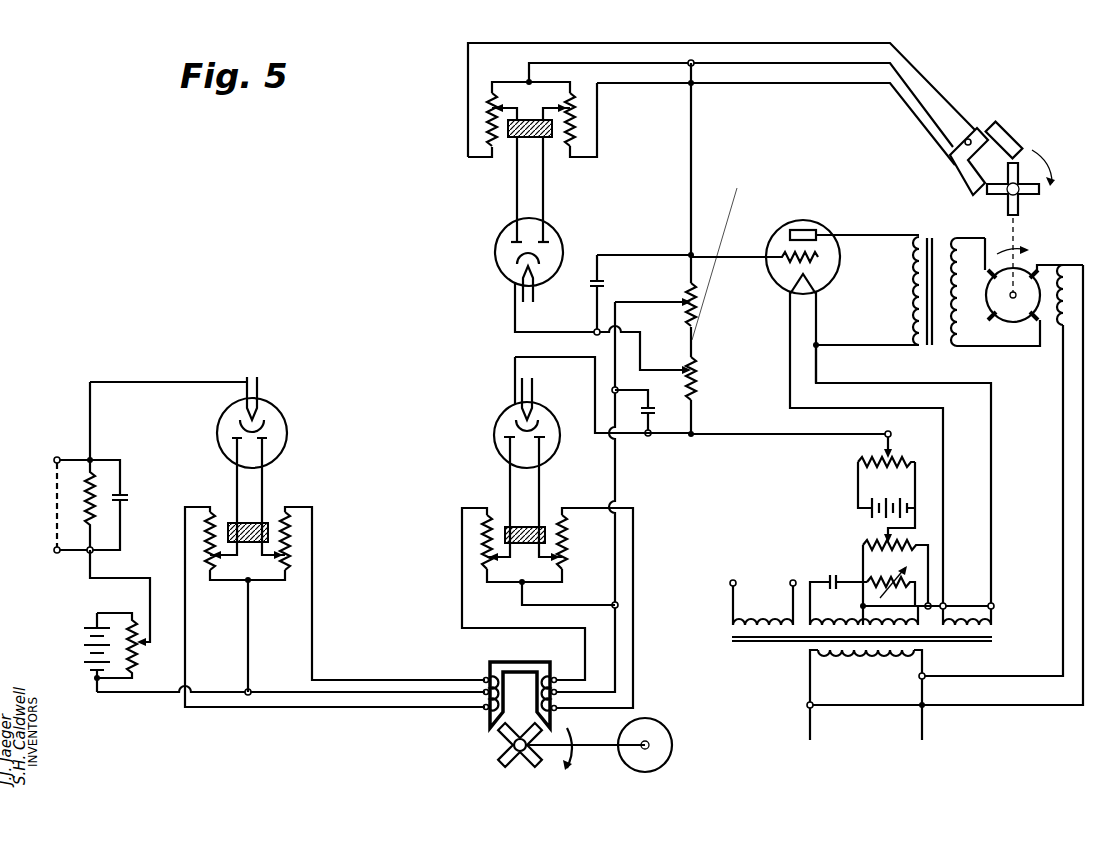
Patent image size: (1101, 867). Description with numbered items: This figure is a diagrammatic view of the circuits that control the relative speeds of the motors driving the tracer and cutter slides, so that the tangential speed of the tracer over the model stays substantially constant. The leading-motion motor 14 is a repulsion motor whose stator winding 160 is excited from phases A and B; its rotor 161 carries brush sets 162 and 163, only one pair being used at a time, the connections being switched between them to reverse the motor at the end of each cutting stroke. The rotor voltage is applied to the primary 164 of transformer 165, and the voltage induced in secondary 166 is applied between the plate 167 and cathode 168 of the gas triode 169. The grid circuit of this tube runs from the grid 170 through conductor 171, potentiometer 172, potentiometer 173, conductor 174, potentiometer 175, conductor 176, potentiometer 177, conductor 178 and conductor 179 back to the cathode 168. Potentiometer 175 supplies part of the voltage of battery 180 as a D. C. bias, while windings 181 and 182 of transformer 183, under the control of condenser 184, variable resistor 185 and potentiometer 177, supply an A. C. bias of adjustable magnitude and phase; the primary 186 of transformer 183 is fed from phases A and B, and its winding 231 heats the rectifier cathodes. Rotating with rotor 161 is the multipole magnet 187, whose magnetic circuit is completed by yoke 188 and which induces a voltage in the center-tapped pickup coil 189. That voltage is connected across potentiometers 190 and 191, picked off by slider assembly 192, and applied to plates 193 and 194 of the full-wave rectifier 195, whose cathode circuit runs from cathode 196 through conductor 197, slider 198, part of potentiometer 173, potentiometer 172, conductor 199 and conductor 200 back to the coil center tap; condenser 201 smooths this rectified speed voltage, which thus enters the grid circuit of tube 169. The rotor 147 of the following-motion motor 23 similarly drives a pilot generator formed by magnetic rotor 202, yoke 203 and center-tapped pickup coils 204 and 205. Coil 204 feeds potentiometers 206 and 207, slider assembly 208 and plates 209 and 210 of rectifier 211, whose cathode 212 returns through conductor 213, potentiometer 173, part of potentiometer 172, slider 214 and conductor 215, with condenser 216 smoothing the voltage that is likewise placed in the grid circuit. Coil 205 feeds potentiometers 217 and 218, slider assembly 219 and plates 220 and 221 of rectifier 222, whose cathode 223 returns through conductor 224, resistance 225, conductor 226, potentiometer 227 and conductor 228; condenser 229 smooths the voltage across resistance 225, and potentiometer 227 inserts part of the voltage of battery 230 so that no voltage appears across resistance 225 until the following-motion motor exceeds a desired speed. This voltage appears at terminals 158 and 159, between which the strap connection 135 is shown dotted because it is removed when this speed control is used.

The leading-motion motor 14 is at (905, 284).
The following-motion motor 23 is at (662, 732).
The strap connection 135 is at (55, 470).
The rotor of the following-motion motor 147 is at (660, 745).
The connection point 158 is at (55, 550).
The connection point 159 is at (55, 459).
The stator winding 160 is at (1063, 326).
The rotor 161 is at (1010, 344).
The brush set 162 is at (986, 275).
The brush set 163 is at (1035, 269).
The primary 164 is at (952, 258).
The transformer 165 is at (929, 238).
The secondary 166 is at (910, 285).
The plate 167 is at (816, 233).
The cathode 168 is at (820, 292).
The gas triode 169 is at (776, 228).
The grid 170 is at (785, 262).
The conductor 171 is at (722, 257).
The potentiometer 172 is at (695, 310).
The potentiometer 173 is at (690, 402).
The conductor 174 is at (780, 435).
The potentiometer 175 is at (885, 457).
The conductor 176 is at (917, 518).
The potentiometer 177 is at (885, 545).
The conductor 178 is at (965, 605).
The conductor 179 is at (994, 478).
The battery 180 is at (880, 503).
The winding 181 is at (812, 640).
The winding 182 is at (930, 641).
The transformer 183 is at (735, 640).
The condenser 184 is at (833, 576).
The variable resistor 185 is at (870, 584).
The primary 186 is at (862, 654).
The multipole magnet 187 is at (1027, 195).
The yoke 188 is at (1025, 140).
The center-tapped pickup coil 189 is at (967, 135).
The potentiometer 190 is at (488, 122).
The potentiometer 191 is at (572, 103).
The slider assembly 192 is at (531, 139).
The plate 193 is at (512, 241).
The plate 194 is at (548, 242).
The full-wave rectifier 195 is at (495, 258).
The cathode 196 is at (516, 267).
The conductor 197 is at (525, 332).
The potentiometer slider 198 is at (645, 370).
The conductor 199 is at (695, 190).
The conductor 200 is at (755, 62).
The condenser 201 is at (601, 285).
The magnetic rotor 202 is at (512, 762).
The yoke 203 is at (508, 672).
The center-tapped pickup coil 204 is at (551, 675).
The center-tapped pickup coil 205 is at (490, 675).
The potentiometer 206 is at (487, 550).
The potentiometer 207 is at (563, 548).
The slider assembly 208 is at (528, 528).
The plate 209 is at (505, 443).
The plate 210 is at (542, 443).
The rectifier 211 is at (497, 436).
The cathode 212 is at (514, 408).
The conductor 213 is at (570, 357).
The slider 214 is at (636, 302).
The conductor 215 is at (617, 482).
The condenser 216 is at (665, 412).
The potentiometer 217 is at (205, 512).
The potentiometer 218 is at (290, 548).
The slider assembly 219 is at (260, 521).
The plate 220 is at (218, 430).
The plate 221 is at (272, 426).
The rectifier 222 is at (283, 412).
The cathode 223 is at (222, 400).
The conductor 224 is at (130, 382).
The resistance 225 is at (88, 512).
The conductor 226 is at (150, 578).
The potentiometer 227 is at (140, 648).
The conductor 228 is at (125, 693).
The condenser 229 is at (128, 500).
The battery 230 is at (82, 630).
The winding 231 is at (762, 615).